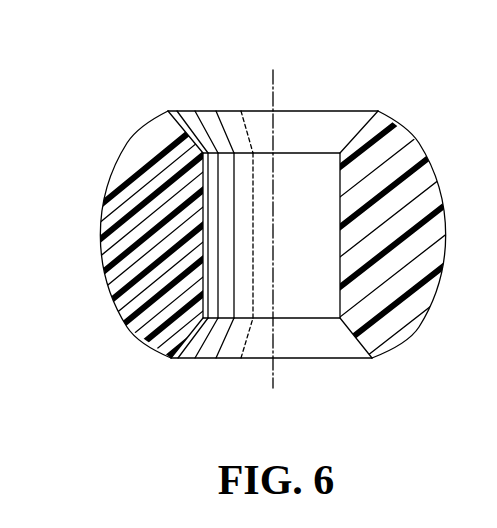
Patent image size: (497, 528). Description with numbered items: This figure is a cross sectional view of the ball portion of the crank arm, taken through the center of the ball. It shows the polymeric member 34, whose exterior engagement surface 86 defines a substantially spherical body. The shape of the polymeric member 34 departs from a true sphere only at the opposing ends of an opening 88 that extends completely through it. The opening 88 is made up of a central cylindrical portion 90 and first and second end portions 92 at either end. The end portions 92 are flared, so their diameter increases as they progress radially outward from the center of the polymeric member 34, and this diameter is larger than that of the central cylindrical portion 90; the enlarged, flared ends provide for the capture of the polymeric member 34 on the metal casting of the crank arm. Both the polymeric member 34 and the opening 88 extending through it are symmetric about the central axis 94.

The polymeric member 34 is at (112, 138).
The exterior engagement surface 86 is at (110, 284).
The opening 88 is at (330, 111).
The central cylindrical portion 90 is at (320, 228).
The end portions 92 is at (358, 111).
The central axis 94 is at (273, 83).